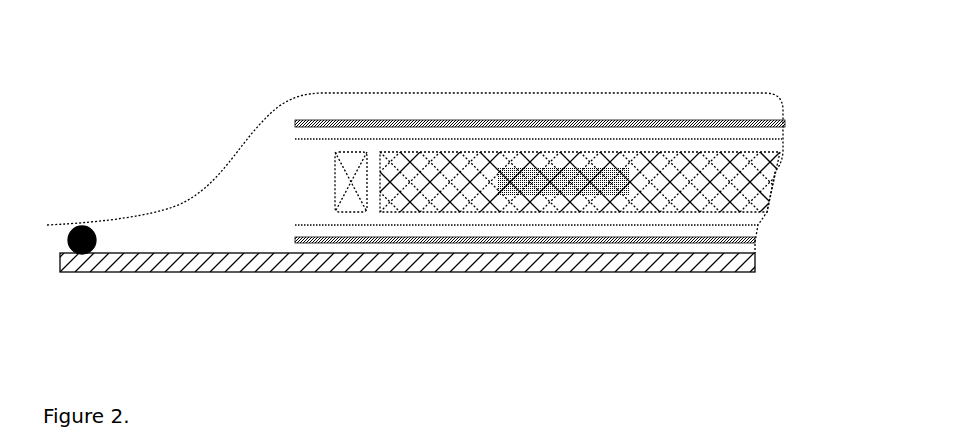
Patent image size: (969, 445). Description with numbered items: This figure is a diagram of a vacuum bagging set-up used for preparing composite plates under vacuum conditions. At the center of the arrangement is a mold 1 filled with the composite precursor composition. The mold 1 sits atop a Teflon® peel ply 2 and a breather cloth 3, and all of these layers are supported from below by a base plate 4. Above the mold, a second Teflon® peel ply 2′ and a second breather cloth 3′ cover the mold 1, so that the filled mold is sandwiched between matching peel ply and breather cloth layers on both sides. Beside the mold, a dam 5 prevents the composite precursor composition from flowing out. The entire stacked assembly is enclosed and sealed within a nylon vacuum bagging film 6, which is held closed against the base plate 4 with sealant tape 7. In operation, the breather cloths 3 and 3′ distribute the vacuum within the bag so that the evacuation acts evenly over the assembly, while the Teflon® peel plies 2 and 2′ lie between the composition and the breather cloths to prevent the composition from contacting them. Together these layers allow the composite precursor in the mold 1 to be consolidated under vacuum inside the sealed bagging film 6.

The mold 1 is at (415, 173).
The Teflon® peel ply 2 is at (763, 138).
The second Teflon® peel ply 2′ is at (756, 222).
The breather cloth 3 is at (296, 118).
The breather cloth 3′ is at (302, 236).
The base plate 4 is at (515, 262).
The dam 5 is at (352, 160).
The nylon vacuum bagging film 6 is at (582, 95).
The sealant tape 7 is at (80, 226).